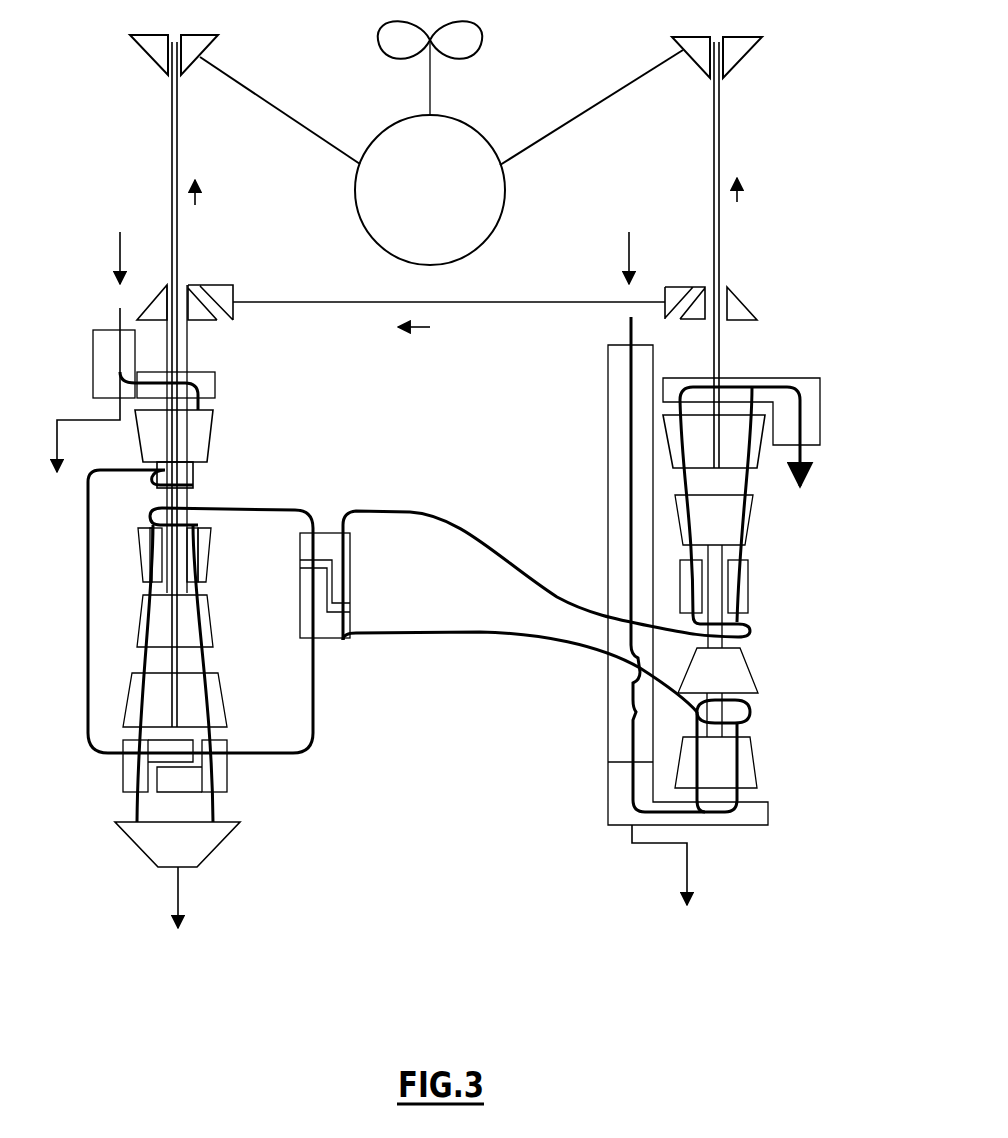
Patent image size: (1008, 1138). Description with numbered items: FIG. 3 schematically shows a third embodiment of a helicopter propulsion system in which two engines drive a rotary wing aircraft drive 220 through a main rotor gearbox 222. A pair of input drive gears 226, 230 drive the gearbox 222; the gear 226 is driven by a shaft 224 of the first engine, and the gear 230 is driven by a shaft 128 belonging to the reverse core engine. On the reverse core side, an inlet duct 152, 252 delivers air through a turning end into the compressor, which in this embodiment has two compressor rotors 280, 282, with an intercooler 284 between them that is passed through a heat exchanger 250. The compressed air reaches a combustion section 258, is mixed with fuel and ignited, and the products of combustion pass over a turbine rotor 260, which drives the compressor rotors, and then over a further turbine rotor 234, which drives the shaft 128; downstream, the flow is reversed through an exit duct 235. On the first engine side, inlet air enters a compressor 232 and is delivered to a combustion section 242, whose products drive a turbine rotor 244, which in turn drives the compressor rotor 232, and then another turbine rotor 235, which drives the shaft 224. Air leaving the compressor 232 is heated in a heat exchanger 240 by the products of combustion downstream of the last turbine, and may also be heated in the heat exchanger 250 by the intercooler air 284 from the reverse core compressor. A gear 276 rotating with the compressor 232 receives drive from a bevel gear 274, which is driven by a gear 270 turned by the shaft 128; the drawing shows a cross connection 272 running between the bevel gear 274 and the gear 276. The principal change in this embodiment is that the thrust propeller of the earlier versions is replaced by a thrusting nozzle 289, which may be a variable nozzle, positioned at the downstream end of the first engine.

The shaft 128 is at (722, 142).
The inlet duct 152 is at (608, 375).
The rotary wing aircraft drive 220 is at (392, 38).
The main rotor gearbox 222 is at (472, 128).
The shaft 224 is at (172, 150).
The input drive gear 226 is at (150, 47).
The input drive gear 230 is at (740, 50).
The compressor 232 is at (207, 435).
The turbine rotor 234 is at (760, 448).
The turbine rotor and exit duct 235 is at (217, 696).
The heat exchanger 240 is at (123, 770).
The combustion section 242 is at (208, 568).
The turbine rotor 244 is at (213, 632).
The heat exchanger 250 is at (350, 556).
The inlet duct 252 is at (608, 740).
The combustion section 258 is at (745, 600).
The turbine rotor 260 is at (752, 530).
The gear 270 is at (735, 307).
The cross shaft 272 is at (498, 300).
The bevel gear 274 is at (670, 287).
The gear 276 is at (150, 305).
The compressor rotor 280 is at (752, 668).
The compressor rotor 282 is at (757, 765).
The intercooler 284 is at (485, 633).
The thrusting nozzle 289 is at (160, 842).